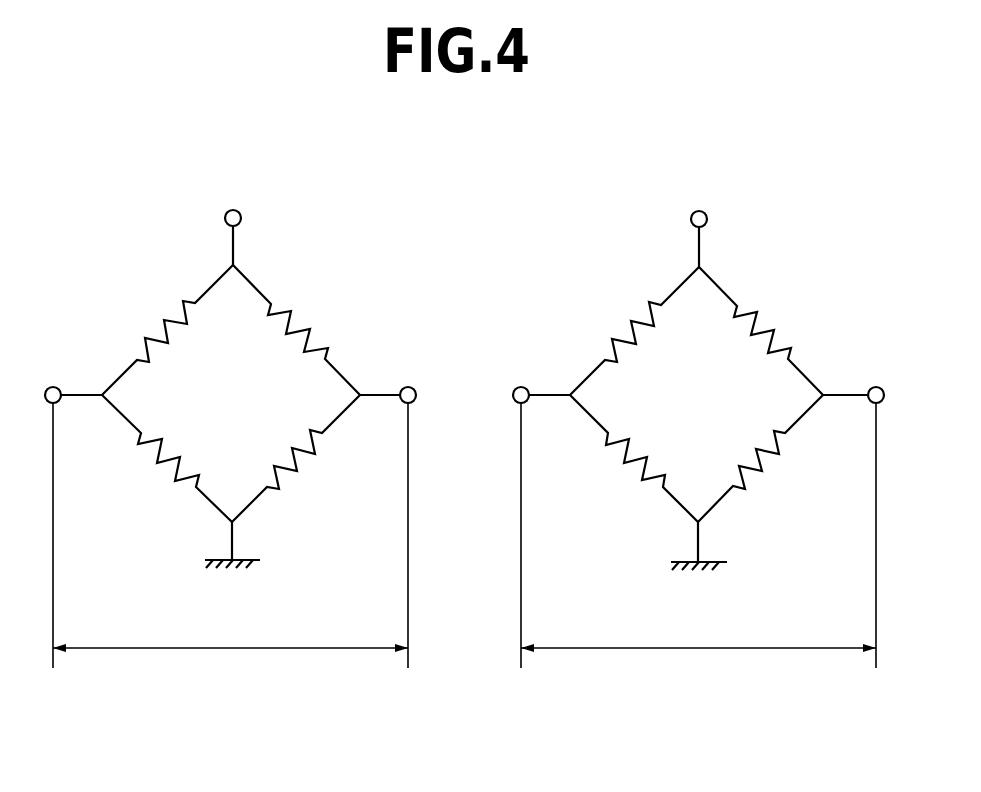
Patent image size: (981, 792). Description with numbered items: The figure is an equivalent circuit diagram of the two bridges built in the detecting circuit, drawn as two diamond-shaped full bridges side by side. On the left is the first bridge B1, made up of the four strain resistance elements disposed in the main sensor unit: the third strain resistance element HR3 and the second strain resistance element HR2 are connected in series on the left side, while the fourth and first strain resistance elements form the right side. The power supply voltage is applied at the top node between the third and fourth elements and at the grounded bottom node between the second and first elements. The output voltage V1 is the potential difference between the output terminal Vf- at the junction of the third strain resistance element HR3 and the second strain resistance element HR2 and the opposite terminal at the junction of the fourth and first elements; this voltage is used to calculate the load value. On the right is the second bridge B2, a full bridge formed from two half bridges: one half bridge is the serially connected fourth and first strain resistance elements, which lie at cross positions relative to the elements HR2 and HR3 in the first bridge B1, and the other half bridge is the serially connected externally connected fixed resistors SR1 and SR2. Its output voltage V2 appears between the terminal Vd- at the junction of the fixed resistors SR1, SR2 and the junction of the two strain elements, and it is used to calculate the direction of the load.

The first bridge circuit B1 is at (322, 190).
The second bridge circuit B2 is at (805, 210).
The second strain resistance element HR2 is at (163, 458).
The third strain resistance element HR3 is at (167, 330).
The fixed resistor SR1 is at (633, 331).
The fixed resistor SR2 is at (630, 458).
The output terminal of the first bridge Vf- is at (67, 376).
The output terminal of the second bridge Vd- is at (535, 376).
The output voltage of the first bridge V1 is at (230, 542).
The output voltage of the second bridge V2 is at (698, 543).